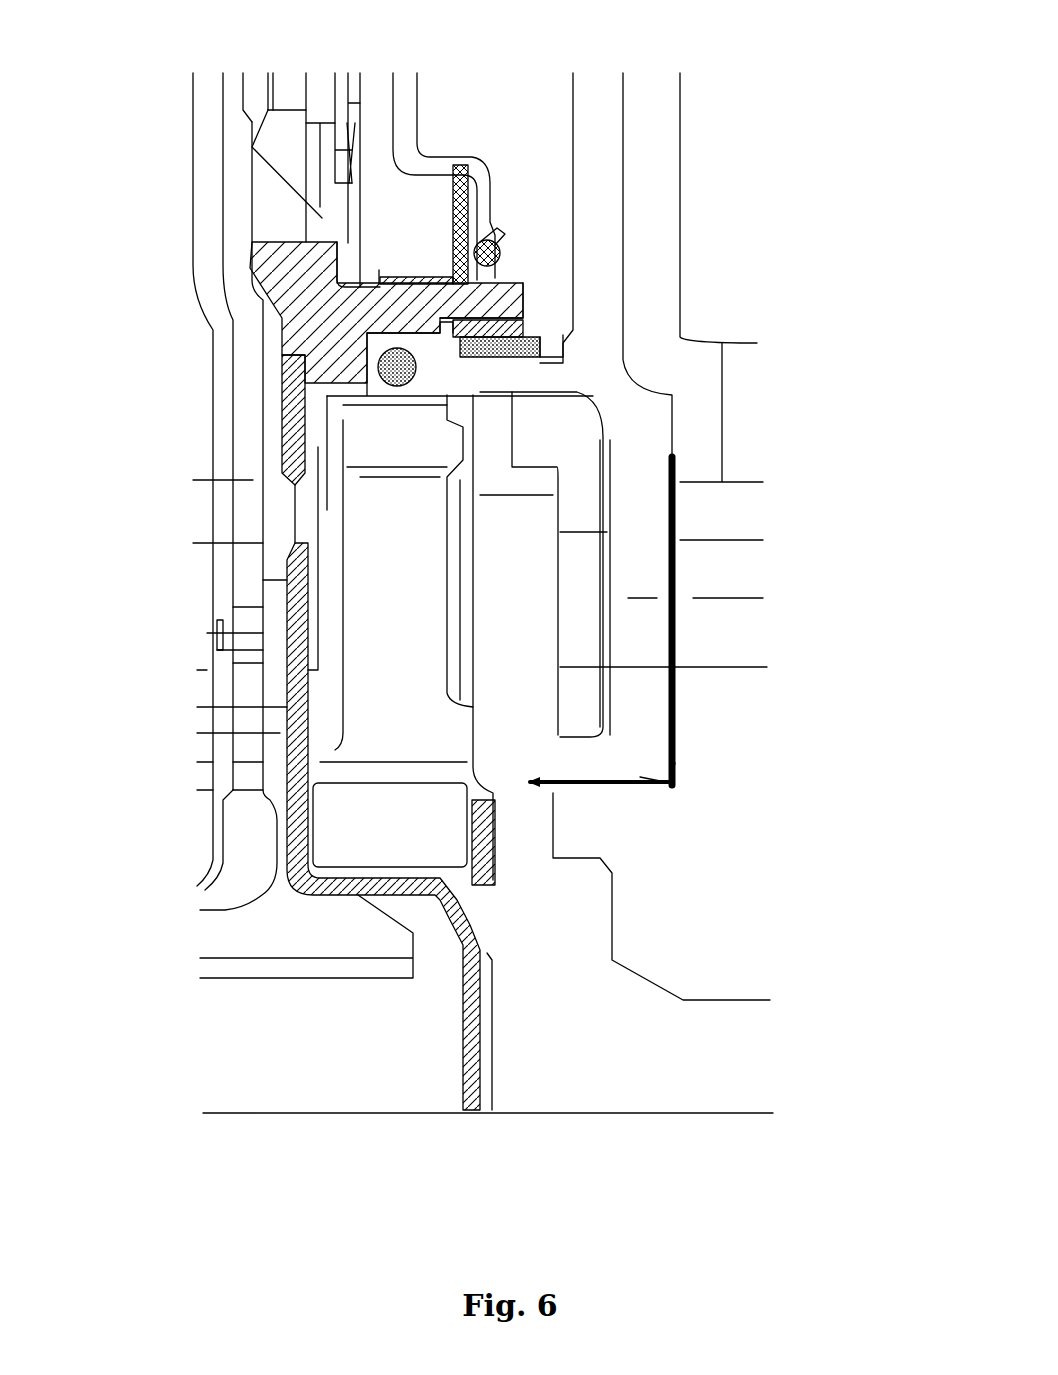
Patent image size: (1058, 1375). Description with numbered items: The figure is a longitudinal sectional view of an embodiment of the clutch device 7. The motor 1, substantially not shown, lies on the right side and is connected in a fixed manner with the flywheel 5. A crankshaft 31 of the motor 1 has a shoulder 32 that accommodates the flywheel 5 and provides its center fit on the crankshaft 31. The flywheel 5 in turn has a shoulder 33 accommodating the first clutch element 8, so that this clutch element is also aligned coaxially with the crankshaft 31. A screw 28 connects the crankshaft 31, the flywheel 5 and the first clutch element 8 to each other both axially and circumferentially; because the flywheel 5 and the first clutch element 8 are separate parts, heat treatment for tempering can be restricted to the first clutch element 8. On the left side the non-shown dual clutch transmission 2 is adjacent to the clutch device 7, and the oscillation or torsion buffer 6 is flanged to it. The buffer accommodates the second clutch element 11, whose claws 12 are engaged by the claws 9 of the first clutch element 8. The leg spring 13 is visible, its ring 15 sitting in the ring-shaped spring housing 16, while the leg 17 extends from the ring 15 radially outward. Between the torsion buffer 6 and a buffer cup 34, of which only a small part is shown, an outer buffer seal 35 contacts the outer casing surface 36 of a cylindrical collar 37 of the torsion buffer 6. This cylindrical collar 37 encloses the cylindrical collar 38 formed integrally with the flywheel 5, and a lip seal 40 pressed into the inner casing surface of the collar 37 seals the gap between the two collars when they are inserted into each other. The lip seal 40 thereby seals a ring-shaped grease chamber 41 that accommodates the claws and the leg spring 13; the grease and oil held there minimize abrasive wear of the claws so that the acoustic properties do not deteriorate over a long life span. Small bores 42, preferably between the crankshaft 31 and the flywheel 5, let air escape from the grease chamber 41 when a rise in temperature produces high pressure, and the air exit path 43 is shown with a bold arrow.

The motor 1 is at (57, 613).
The dual clutch transmission 2 is at (357, 515).
The flywheel 5 is at (657, 742).
The torsion buffer 6 is at (280, 287).
The clutch device 7 is at (517, 102).
The first clutch element 8 is at (600, 700).
The claws 9 is at (355, 410).
The second clutch element 11 is at (322, 428).
The claws 12 is at (362, 465).
The leg spring 13 is at (387, 690).
The ring 15 is at (433, 848).
The spring housing 16 is at (493, 882).
The leg 17 is at (343, 622).
The screw 28 is at (516, 668).
The crankshaft 31 is at (727, 975).
The shoulder 32 is at (632, 795).
The shoulder 33 is at (677, 767).
The buffer cup 34 is at (420, 78).
The outer buffer seal 35 is at (510, 234).
The outer casing surface 36 is at (513, 292).
The cylindrical collar 37 is at (527, 287).
The cylindrical collar 38 is at (472, 387).
The lip seal 40 is at (540, 328).
The grease chamber 41 is at (412, 371).
The small bores 42 is at (680, 801).
The air exit path 43 is at (677, 560).